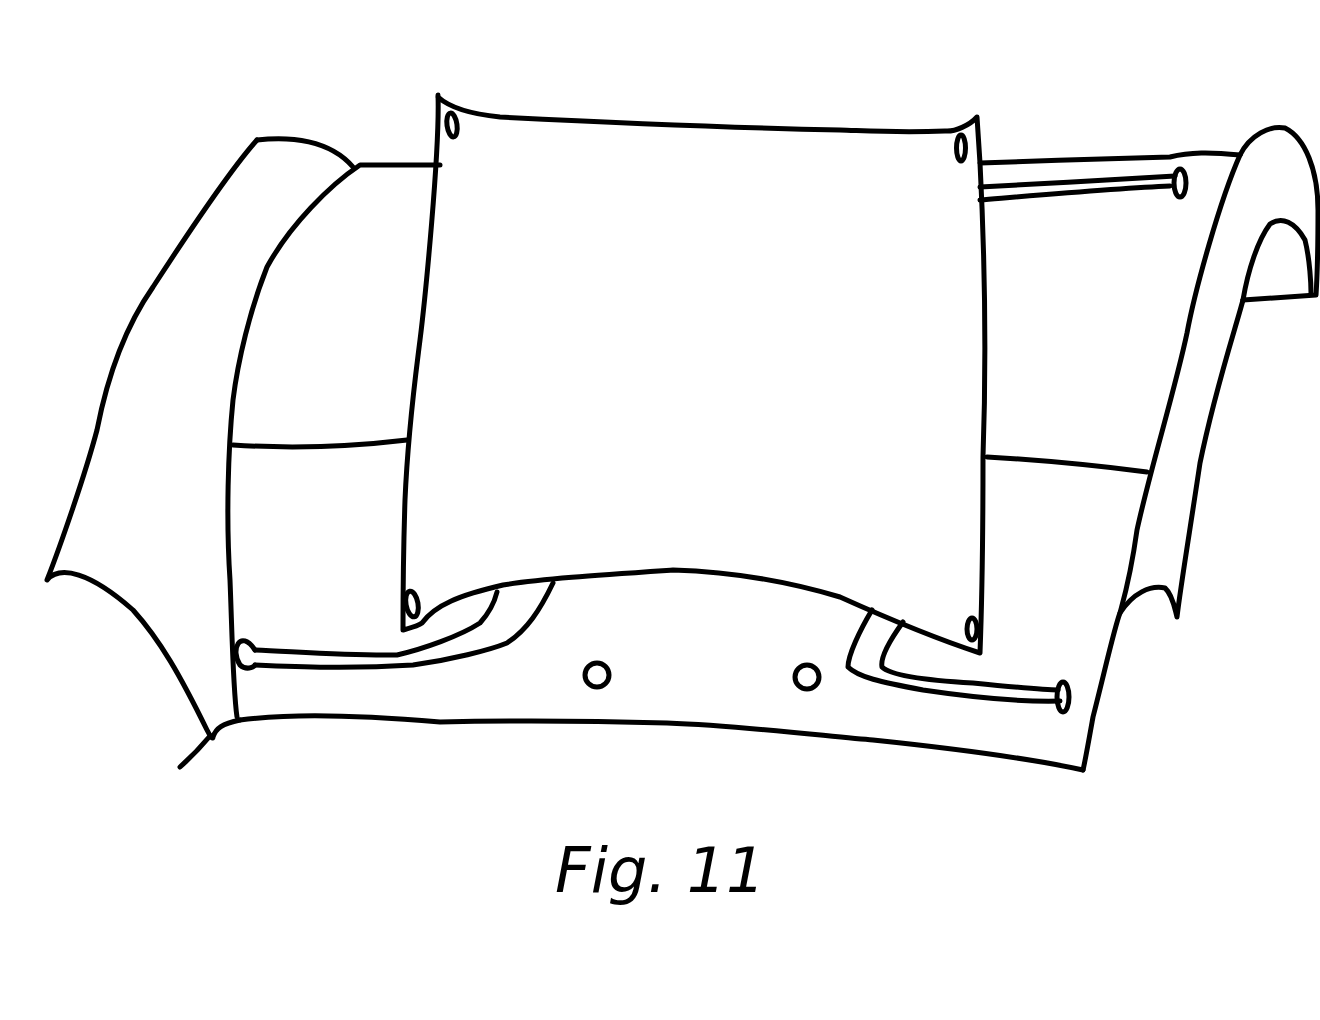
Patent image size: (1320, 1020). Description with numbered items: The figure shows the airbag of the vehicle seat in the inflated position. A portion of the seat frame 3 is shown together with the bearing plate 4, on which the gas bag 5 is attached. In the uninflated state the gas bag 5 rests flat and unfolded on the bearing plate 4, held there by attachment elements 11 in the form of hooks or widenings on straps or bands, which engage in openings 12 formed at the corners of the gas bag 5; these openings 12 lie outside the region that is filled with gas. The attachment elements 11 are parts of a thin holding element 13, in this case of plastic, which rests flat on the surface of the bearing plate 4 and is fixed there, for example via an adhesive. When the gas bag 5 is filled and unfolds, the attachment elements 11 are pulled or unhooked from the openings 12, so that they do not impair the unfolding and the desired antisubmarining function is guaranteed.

The seat frame 3 is at (173, 293).
The bearing plate 4 is at (358, 233).
The gas bag 5 is at (550, 143).
The attachment elements 11 is at (1175, 160).
The openings 12 is at (453, 112).
The holding element 13 is at (1010, 187).